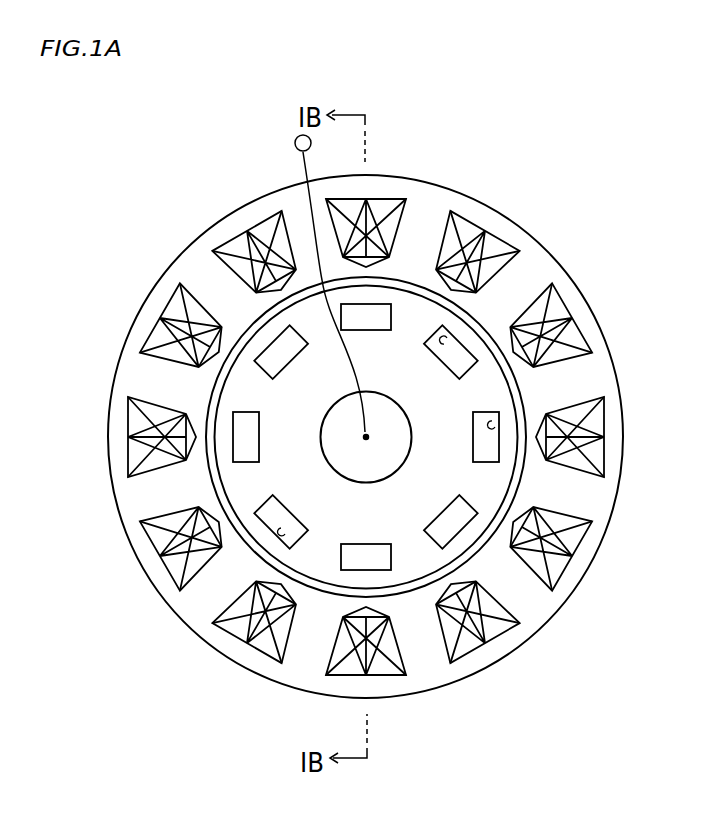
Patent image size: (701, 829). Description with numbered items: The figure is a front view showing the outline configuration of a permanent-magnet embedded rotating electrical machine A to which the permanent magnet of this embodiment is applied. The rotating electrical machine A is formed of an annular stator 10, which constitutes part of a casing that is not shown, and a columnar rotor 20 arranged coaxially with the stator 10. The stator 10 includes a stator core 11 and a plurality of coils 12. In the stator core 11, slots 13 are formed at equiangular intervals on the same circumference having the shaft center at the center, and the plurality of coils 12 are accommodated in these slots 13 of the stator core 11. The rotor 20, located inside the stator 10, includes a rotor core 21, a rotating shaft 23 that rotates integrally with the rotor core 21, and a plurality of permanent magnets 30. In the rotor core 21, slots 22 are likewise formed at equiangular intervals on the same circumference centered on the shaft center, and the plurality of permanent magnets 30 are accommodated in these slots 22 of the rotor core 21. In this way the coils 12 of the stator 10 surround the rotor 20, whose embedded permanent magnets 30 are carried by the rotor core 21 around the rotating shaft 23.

The permanent-magnet embedded rotating electrical machine A is at (210, 221).
The stator 10 is at (548, 632).
The stator core 11 is at (260, 210).
The coils 12 is at (178, 307).
The slots 13 is at (153, 339).
The rotor 20 is at (213, 400).
The rotor core 21 is at (428, 320).
The slots 22 is at (461, 352).
The rotating shaft 23 is at (343, 452).
The permanent magnets 30 is at (447, 338).